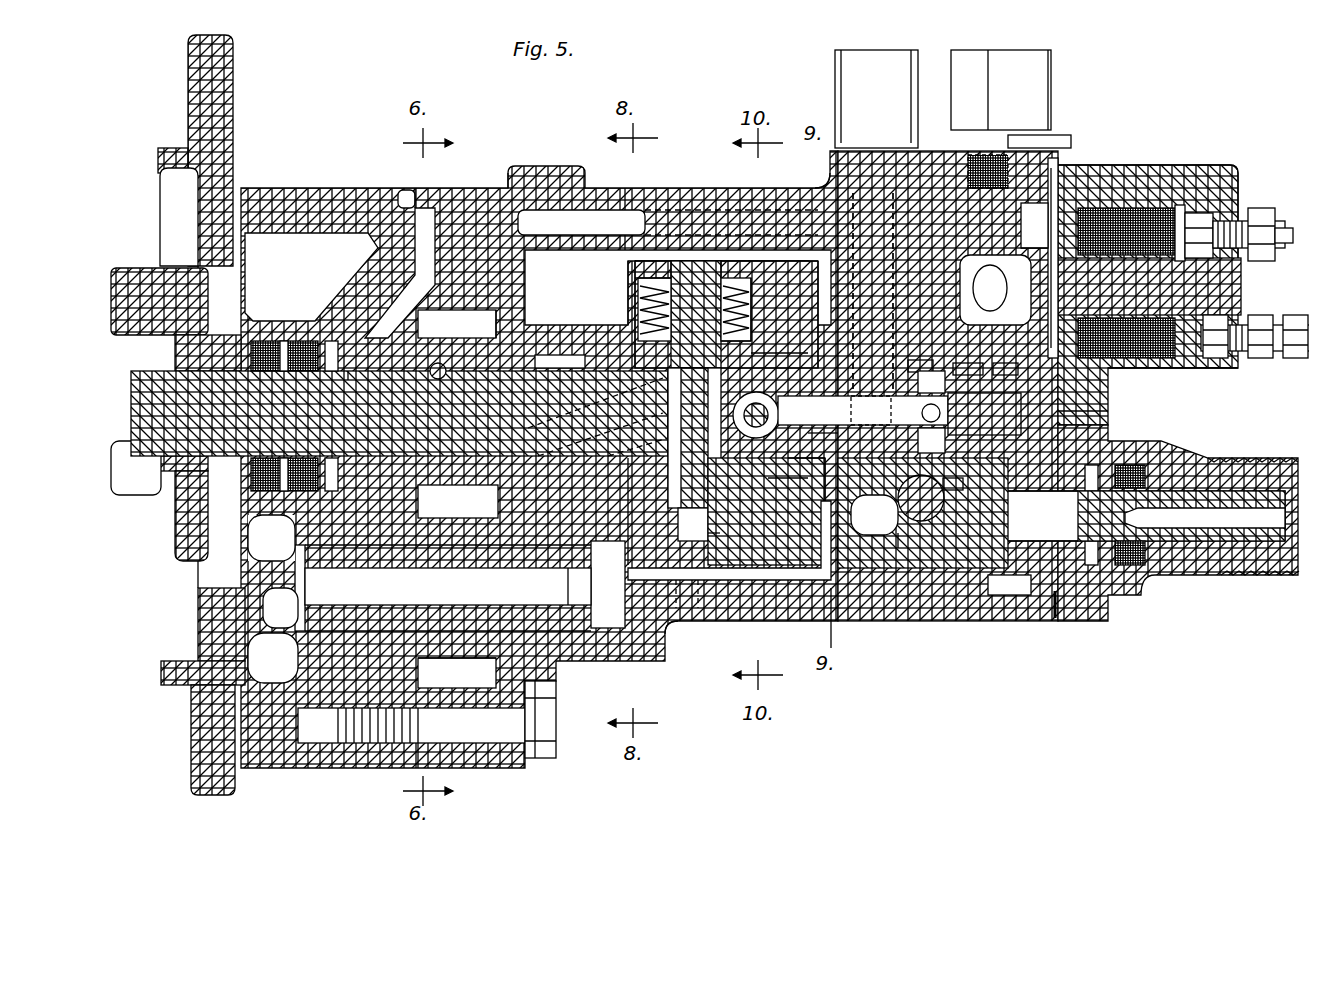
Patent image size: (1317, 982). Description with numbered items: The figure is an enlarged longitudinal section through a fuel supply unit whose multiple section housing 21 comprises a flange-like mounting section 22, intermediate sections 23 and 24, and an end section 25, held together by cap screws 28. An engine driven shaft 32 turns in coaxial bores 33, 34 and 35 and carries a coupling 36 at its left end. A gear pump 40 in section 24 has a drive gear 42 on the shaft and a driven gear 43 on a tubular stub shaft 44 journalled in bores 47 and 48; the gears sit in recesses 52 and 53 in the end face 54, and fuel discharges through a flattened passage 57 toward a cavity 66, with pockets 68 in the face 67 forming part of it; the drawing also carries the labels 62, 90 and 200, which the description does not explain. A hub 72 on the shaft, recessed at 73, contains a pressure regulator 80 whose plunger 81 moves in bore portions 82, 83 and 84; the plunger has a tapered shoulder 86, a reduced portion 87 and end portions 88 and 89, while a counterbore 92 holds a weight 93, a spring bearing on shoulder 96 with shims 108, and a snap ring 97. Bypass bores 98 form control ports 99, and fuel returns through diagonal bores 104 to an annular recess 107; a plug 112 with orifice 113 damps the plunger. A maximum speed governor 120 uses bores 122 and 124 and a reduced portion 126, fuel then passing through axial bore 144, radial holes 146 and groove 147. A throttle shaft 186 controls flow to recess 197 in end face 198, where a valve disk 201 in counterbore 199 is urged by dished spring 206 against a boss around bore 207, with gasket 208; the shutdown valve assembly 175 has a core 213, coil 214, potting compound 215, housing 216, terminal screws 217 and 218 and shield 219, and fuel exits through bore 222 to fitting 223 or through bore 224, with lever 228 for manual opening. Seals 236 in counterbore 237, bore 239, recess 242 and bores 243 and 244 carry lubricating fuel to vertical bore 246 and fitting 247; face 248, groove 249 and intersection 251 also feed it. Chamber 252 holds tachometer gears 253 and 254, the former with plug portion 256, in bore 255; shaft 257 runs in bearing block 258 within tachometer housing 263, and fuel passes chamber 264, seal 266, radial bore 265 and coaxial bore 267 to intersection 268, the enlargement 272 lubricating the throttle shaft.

The multiple section housing 21 is at (685, 180).
The mounting or end section 22 is at (226, 148).
The intermediate section 23 is at (305, 180).
The intermediate section 24 is at (478, 180).
The end section 25 is at (642, 180).
The cap screws 28 is at (548, 697).
The shaft 32 is at (392, 416).
The bore 33 is at (342, 365).
The bore 34 is at (438, 368).
The bore 35 is at (923, 511).
The drive member or coupling 36 is at (117, 263).
The gear pump 40 is at (524, 305).
The drive gear 42 is at (457, 324).
The driven gear 43 is at (457, 668).
The tubular stub shaft 44 is at (377, 562).
The bore 47 is at (322, 612).
The bore 48 is at (538, 600).
The cylindrical recess 52 is at (393, 306).
The cylindrical recess 53 is at (411, 724).
The end face 54 is at (420, 745).
The flattened passage 57 is at (563, 500).
The passage 62 is at (487, 318).
The cylindrical cavity or recess 66 is at (765, 585).
The inner or right face 67 is at (620, 649).
The weight reducing pockets or recesses 68 is at (578, 318).
The cylindrical hub 72 is at (726, 314).
The annular recess 73 is at (608, 584).
The pressure regulator 80 is at (700, 248).
The plunger 81 is at (696, 316).
The portion 82 is at (708, 527).
The portion 83 is at (738, 348).
The portion 84 is at (779, 353).
The annular tapered shoulder 86 is at (660, 420).
The reduced diameter portion 87 is at (655, 382).
The end portion 88 is at (694, 454).
The end portion 89 is at (696, 263).
The valve bore 90 is at (726, 276).
The counterbore 92 is at (627, 258).
The weight 93 is at (655, 295).
The annular shoulder 96 is at (628, 298).
The snap ring 97 is at (730, 295).
The bores 98 is at (732, 511).
The control ports 99 is at (726, 511).
The diagonally extending bores 104 is at (595, 403).
The annular recess 107 is at (548, 347).
The shims 108 is at (778, 311).
The plug 112 is at (668, 580).
The orifice opening 113 is at (690, 575).
The maximum speed governor 120 is at (817, 445).
The bore 122 is at (789, 491).
The bore 124 is at (802, 468).
The reduced diameter portion 126 is at (772, 407).
The axial bore 144 is at (863, 415).
The radial holes 146 is at (912, 404).
The circumferential groove 147 is at (920, 349).
The shutdown valve assembly 175 is at (1170, 160).
The throttle shaft 186 is at (913, 513).
The annular recess 197 is at (1013, 215).
The outer end face 198 is at (1048, 142).
The counterbored portion 199 is at (1048, 152).
The passage 200 is at (968, 270).
The valve plate or disk 201 is at (1062, 302).
The dished spring 206 is at (1100, 160).
The axial bore 207 is at (952, 300).
The annular gasket 208 is at (1010, 238).
The core 213 is at (1238, 275).
The coil 214 is at (1120, 385).
The potting compound 215 is at (1165, 360).
The housing 216 is at (1215, 158).
The terminal screw 217 is at (1262, 205).
The terminal screw 218 is at (1305, 350).
The shield 219 is at (1062, 258).
The vertical bore 222 is at (960, 190).
The outlet fitting 223 is at (1043, 72).
The horizontal bore 224 is at (1008, 173).
The operating lever 228 is at (1052, 128).
The seals 236 is at (281, 332).
The counterbore 237 is at (285, 485).
The bore 239 is at (338, 296).
The recess 242 is at (398, 182).
The axially extending bore 243 is at (520, 210).
The axially extending bore 244 is at (775, 202).
The vertical bore 246 is at (948, 386).
The fitting 247 is at (827, 70).
The face 248 is at (873, 293).
The annular groove 249 is at (874, 293).
The intersection 251 is at (871, 415).
The chamber 252 is at (963, 354).
The tachometer drive gear 253 is at (998, 354).
The tachometer drive gear 254 is at (995, 587).
The bore 255 is at (1050, 590).
The plug portion 256 is at (969, 412).
The tachometer drive shaft 257 is at (1118, 516).
The bearing block 258 is at (1014, 516).
The tachometer housing 263 is at (1150, 585).
The annular chamber 264 is at (1083, 570).
The radial bore 265 is at (1161, 516).
The annular seal 266 is at (1120, 560).
The coaxial bore 267 is at (888, 540).
The intersection 268 is at (862, 527).
The enlargement 272 is at (925, 482).